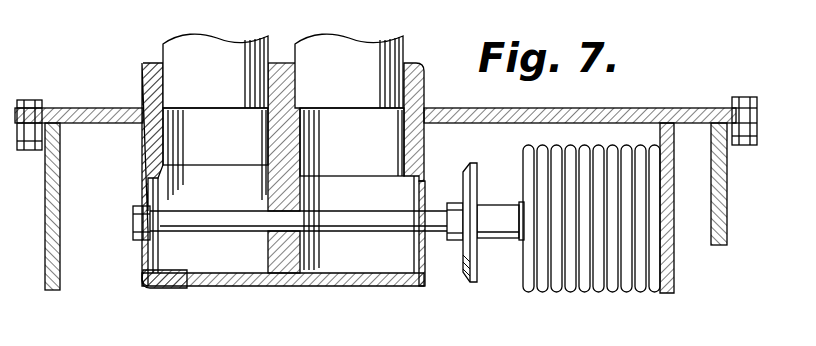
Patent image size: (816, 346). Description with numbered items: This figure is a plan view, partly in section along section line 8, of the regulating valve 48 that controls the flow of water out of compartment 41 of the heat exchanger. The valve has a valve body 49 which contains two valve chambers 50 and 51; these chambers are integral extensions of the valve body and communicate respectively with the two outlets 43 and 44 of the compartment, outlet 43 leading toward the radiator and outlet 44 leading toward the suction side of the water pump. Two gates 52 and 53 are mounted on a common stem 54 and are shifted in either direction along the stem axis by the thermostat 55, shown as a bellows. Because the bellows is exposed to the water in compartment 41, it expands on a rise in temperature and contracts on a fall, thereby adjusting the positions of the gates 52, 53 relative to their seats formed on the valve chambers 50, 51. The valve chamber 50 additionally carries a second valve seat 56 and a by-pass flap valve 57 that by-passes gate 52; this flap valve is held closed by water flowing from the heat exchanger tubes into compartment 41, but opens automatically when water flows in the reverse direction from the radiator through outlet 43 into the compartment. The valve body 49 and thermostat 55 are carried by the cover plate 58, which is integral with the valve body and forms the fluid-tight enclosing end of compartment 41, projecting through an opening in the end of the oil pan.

The section line 8- 8 is at (217, 92).
The compartment 41 is at (60, 262).
The outlet 43 is at (170, 50).
The outlet 44 is at (395, 45).
The regulating valve 48 is at (136, 83).
The valve body 49 is at (272, 203).
The valve chamber 50 is at (236, 164).
The valve chamber 51 is at (368, 166).
The gate 52 is at (143, 198).
The gate 53 is at (477, 172).
The stem 54 is at (352, 222).
The thermostat 55 is at (546, 292).
The second valve seat 56 is at (284, 282).
The by-pass flap valve 57 is at (186, 285).
The cover plate 58 is at (449, 108).